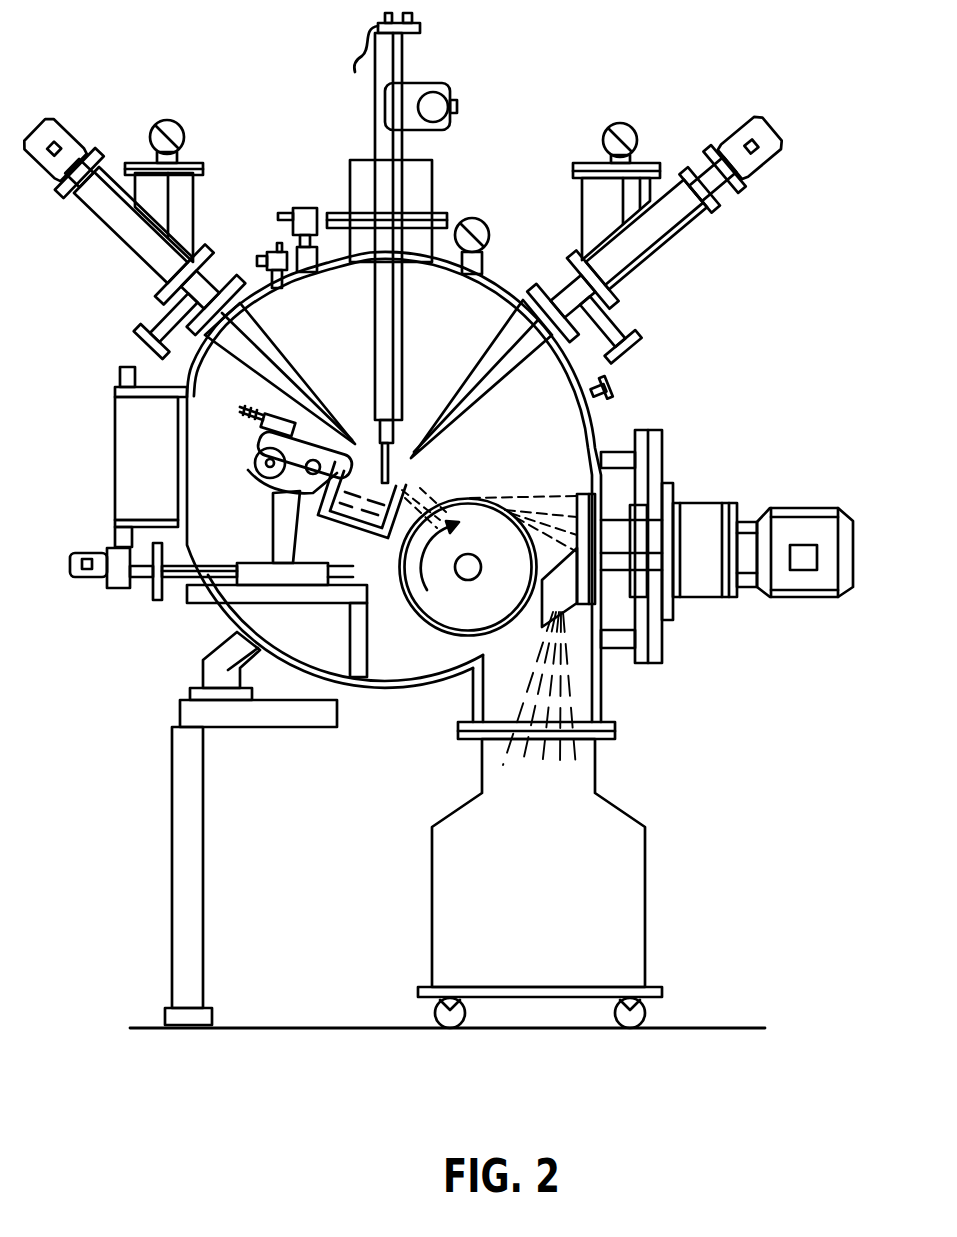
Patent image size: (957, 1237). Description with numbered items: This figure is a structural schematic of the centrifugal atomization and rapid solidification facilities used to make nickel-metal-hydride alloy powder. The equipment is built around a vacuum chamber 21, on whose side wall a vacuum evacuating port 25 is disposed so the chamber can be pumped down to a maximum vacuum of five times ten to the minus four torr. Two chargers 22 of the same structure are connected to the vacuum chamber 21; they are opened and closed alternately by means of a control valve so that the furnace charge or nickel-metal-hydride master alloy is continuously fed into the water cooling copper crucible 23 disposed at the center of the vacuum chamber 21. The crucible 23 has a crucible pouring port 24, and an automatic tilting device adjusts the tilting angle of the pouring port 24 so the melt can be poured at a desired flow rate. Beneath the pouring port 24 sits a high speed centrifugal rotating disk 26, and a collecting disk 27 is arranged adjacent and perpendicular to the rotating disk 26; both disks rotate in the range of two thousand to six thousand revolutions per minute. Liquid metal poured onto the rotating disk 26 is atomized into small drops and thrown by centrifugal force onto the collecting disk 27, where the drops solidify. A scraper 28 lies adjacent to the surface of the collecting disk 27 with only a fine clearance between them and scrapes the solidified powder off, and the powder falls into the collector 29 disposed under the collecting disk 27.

The vacuum chamber 21 is at (310, 325).
The charger 22 is at (127, 234).
The water cooling copper crucible 23 is at (262, 488).
The crucible pouring port 24 is at (405, 325).
The vacuum evacuating port 25 is at (142, 438).
The centrifugal rotating disk 26 is at (474, 523).
The collecting disk 27 is at (583, 540).
The scraper 28 is at (555, 600).
The collector 29 is at (637, 888).